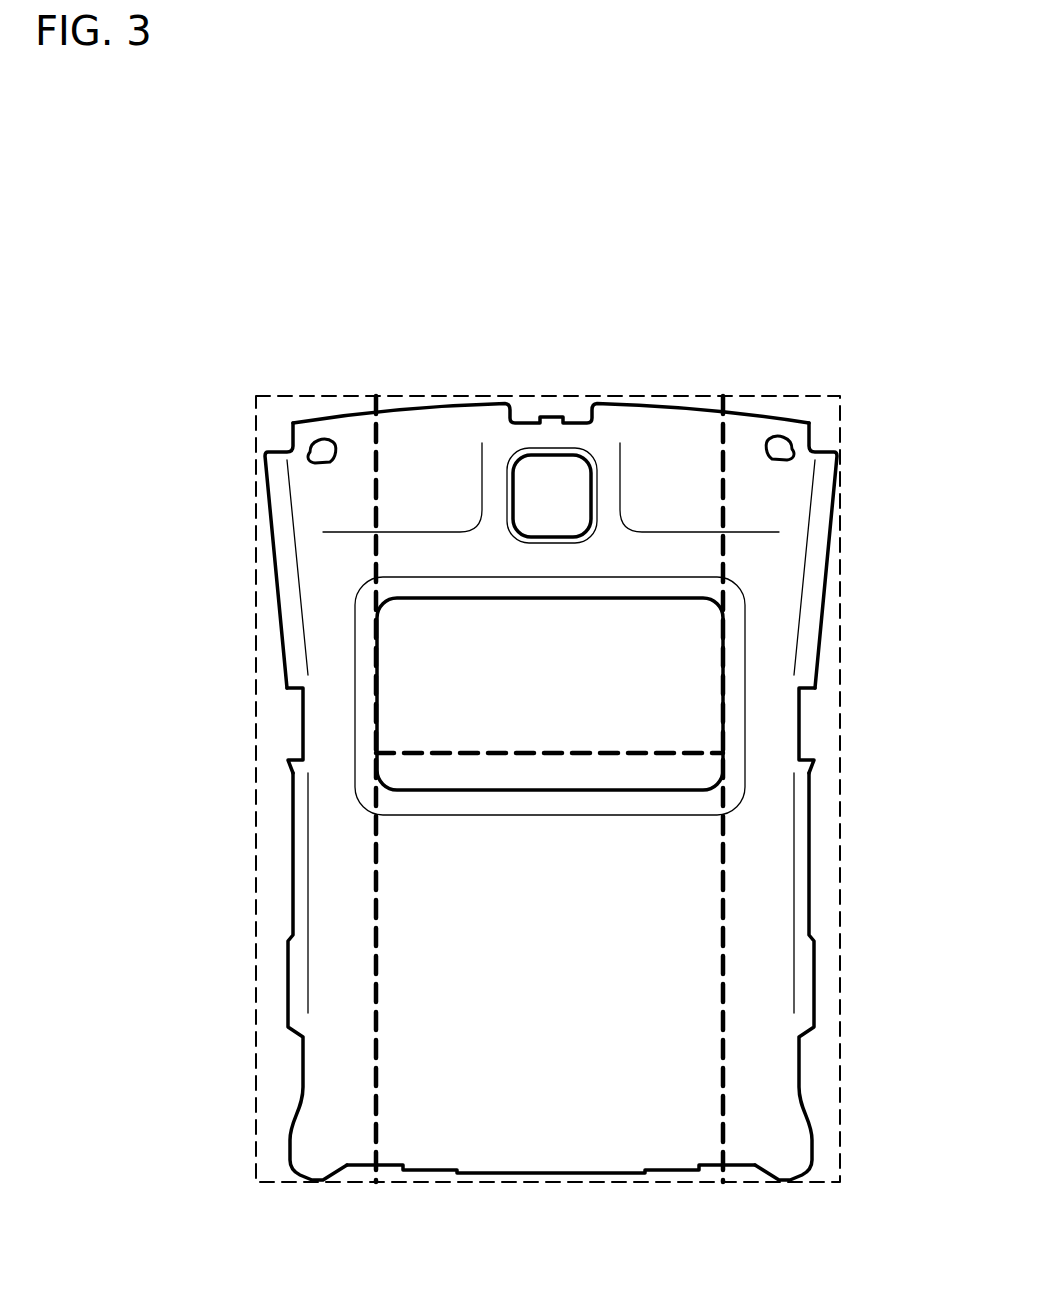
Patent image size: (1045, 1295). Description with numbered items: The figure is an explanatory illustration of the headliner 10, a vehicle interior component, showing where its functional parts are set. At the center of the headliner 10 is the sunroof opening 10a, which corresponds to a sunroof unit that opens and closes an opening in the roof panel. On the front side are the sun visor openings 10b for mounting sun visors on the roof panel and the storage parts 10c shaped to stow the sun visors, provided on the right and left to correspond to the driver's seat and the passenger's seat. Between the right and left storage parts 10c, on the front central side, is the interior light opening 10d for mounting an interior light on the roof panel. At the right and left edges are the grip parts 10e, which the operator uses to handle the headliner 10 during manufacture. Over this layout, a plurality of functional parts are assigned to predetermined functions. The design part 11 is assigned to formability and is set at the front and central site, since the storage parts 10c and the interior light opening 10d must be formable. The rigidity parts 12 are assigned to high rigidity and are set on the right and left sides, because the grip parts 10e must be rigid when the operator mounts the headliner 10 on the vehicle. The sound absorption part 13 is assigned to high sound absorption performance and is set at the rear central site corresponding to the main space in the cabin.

The headliner 10 is at (724, 328).
The design part 11 is at (470, 403).
The sunroof opening 10a is at (457, 790).
The sun visor openings 10b is at (322, 440).
The storage parts 10c is at (343, 532).
The interior light opening 10d is at (590, 496).
The grip parts 10e is at (302, 737).
The rigidity parts 12 is at (333, 920).
The sound absorption part 13 is at (595, 1122).